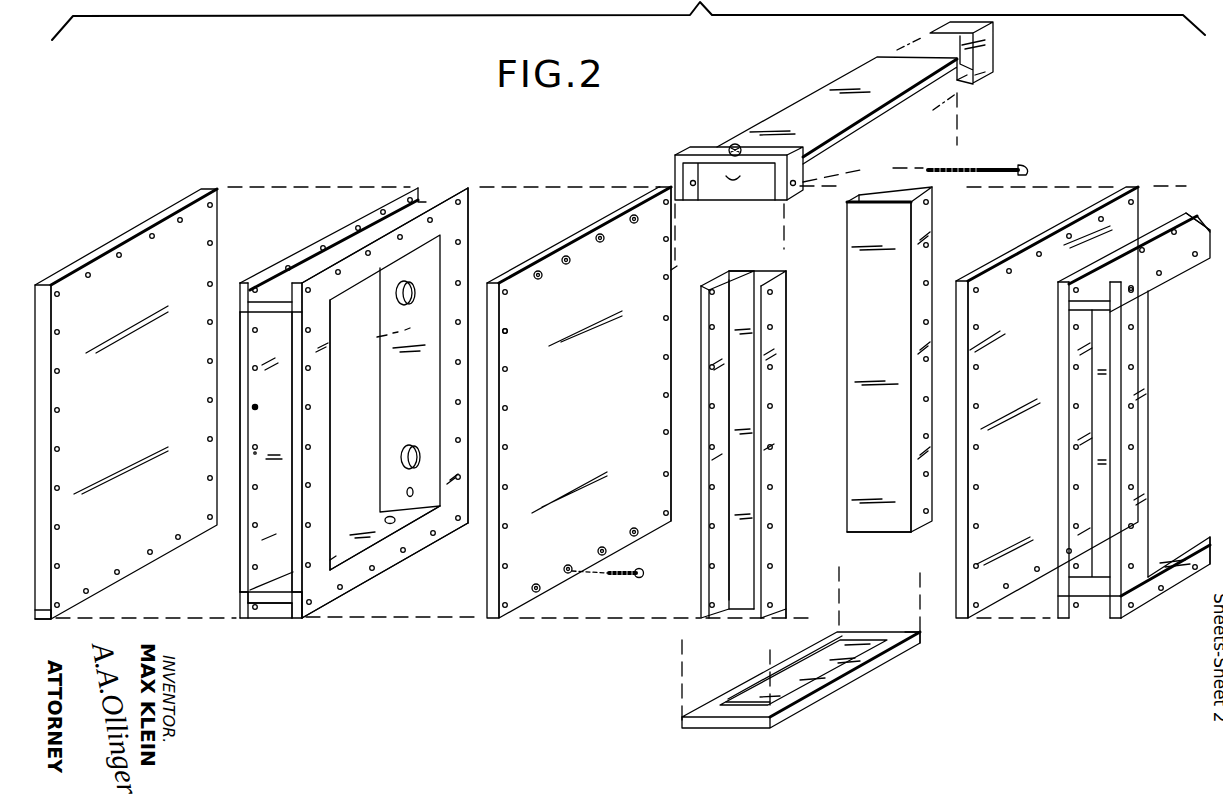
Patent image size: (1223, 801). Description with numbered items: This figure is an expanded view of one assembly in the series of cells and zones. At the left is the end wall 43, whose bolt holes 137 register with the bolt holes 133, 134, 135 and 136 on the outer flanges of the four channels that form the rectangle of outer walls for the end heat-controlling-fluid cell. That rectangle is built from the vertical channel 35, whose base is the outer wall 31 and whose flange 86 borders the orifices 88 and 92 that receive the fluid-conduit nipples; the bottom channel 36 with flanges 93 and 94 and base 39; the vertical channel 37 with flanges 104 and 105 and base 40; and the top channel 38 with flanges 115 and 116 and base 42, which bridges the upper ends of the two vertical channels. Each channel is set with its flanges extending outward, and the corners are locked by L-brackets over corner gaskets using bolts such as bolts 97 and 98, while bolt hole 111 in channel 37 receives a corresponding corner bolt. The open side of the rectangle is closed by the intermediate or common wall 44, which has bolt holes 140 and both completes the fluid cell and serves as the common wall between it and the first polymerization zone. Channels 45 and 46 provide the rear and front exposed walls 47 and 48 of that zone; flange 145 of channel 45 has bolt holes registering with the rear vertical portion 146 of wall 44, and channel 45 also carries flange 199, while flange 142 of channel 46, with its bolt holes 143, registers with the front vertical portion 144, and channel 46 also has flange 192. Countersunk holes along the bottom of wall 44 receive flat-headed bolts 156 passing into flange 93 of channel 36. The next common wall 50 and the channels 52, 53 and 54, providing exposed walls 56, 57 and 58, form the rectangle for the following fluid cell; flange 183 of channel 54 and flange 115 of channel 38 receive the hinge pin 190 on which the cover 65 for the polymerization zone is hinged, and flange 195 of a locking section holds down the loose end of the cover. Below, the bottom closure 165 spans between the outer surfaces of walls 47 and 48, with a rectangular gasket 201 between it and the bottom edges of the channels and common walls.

The outer wall 31 is at (402, 383).
The vertical channel 35 is at (473, 285).
The bottom channel 36 is at (283, 598).
The channel 37 is at (240, 552).
The top channel 38 is at (443, 158).
The outer wall 39 is at (339, 550).
The outer wall 40 is at (288, 514).
The outer wall 42 is at (272, 295).
The end wall 43 is at (135, 246).
The common wall 44 is at (620, 245).
The channel 45 is at (880, 535).
The channel 46 is at (744, 607).
The exposed wall 47 is at (875, 325).
The exposed wall 48 is at (741, 405).
The common wall 50 is at (1084, 230).
The channel 52 is at (1200, 574).
The channel 53 is at (1155, 469).
The channel 54 is at (1198, 268).
The exposed wall 56 is at (1172, 532).
The exposed wall 57 is at (1100, 507).
The exposed wall 58 is at (1064, 310).
The cover 65 is at (830, 90).
The flange 86 is at (463, 252).
The orifice 88 is at (415, 445).
The orifice 92 is at (398, 293).
The flange 93 is at (340, 590).
The flange 94 is at (245, 603).
The bolt 97 is at (408, 491).
The bolt 98 is at (394, 522).
The flange 104 is at (318, 572).
The flange 105 is at (254, 454).
The bolt hole 111 is at (290, 556).
The flange 115 is at (465, 205).
The flange 116 is at (334, 245).
The bolt holes 133 is at (378, 334).
The bolt holes 134 is at (265, 620).
The bolt holes 135 is at (254, 408).
The bolt holes 136 is at (420, 198).
The bolt holes 137 is at (64, 614).
The bolt holes 140 is at (508, 331).
The flange 142 is at (698, 554).
The bolt holes 143 is at (727, 283).
The front vertical portion 144 is at (504, 549).
The flange 145 is at (875, 195).
The rear vertical portion 146 is at (688, 201).
The flat-headed bolts 156 is at (615, 578).
The bottom closure 165 is at (798, 700).
The flange 183 is at (1187, 215).
The hinge pin 190 is at (1000, 165).
The flange 192 is at (772, 432).
The flange 195 is at (1131, 384).
The flange 199 is at (932, 234).
The gasket 201 is at (918, 638).